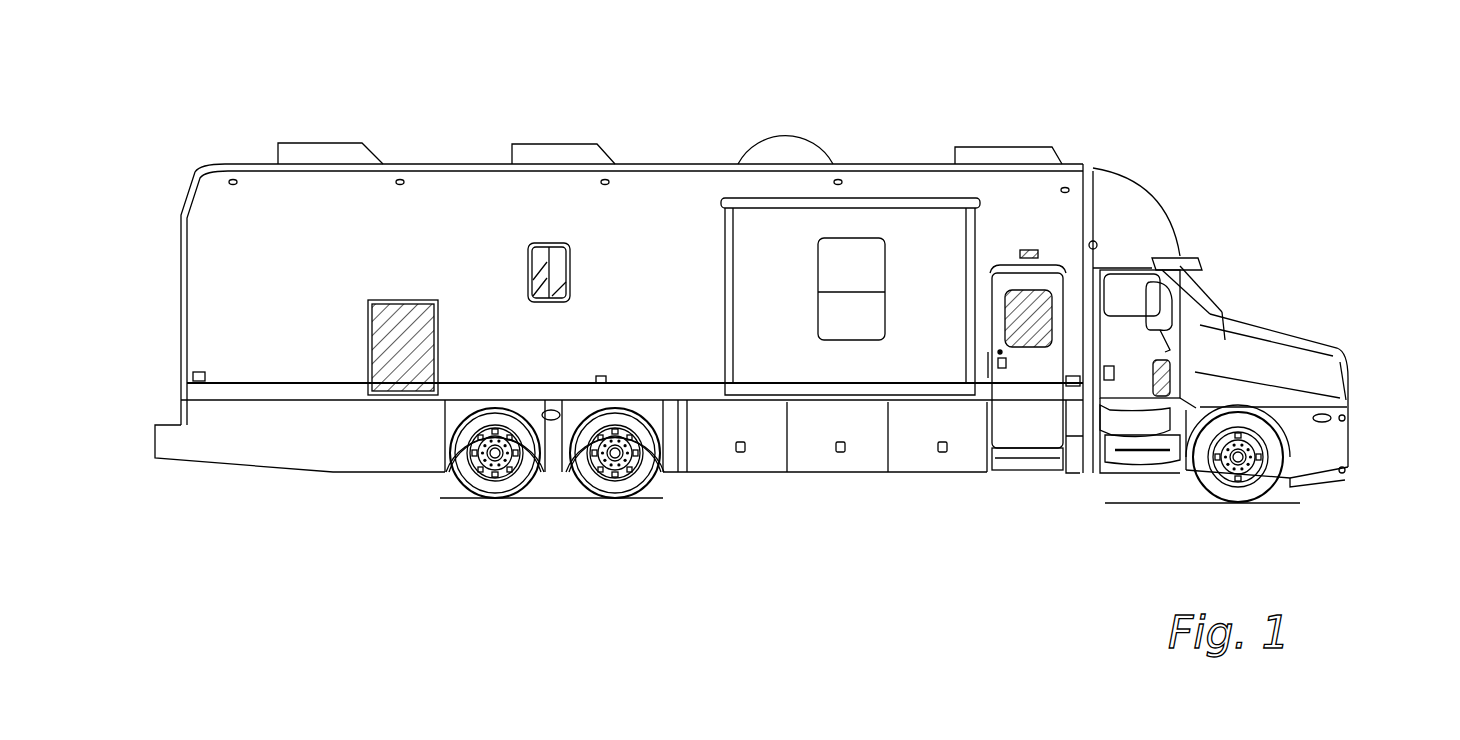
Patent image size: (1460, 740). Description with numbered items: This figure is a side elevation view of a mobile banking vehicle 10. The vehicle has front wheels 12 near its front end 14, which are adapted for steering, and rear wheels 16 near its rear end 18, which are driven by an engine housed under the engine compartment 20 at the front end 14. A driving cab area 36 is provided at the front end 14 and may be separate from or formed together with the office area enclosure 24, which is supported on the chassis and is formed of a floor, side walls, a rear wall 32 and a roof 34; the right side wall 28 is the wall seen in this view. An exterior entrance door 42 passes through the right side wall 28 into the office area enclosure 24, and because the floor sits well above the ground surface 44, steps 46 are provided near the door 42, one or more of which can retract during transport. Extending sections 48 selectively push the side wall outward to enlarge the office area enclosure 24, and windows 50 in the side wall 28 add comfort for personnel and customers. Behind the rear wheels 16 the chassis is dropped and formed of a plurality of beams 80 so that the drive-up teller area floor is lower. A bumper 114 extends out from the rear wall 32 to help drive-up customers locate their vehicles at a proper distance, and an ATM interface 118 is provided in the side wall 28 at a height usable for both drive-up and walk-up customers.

The mobile banking vehicle 10 is at (470, 572).
The front wheels 12 is at (1212, 482).
The front end 14 is at (1346, 341).
The rear wheels 16 is at (515, 480).
The rear end 18 is at (176, 182).
The engine compartment 20 is at (1330, 370).
The office area enclosure 24 is at (834, 132).
The right side wall 28 is at (650, 268).
The rear wall 32 is at (178, 228).
The roof 34 is at (437, 163).
The driving cab area 36 is at (1230, 310).
The exterior entrance door 42 is at (1016, 396).
The ground surface 44 is at (1143, 496).
The steps 46 is at (1026, 456).
The extending sections 48 is at (926, 236).
The windows 50 is at (558, 265).
The beams 80 is at (344, 477).
The bumper 114 is at (170, 440).
The ATM interface 118 is at (408, 402).